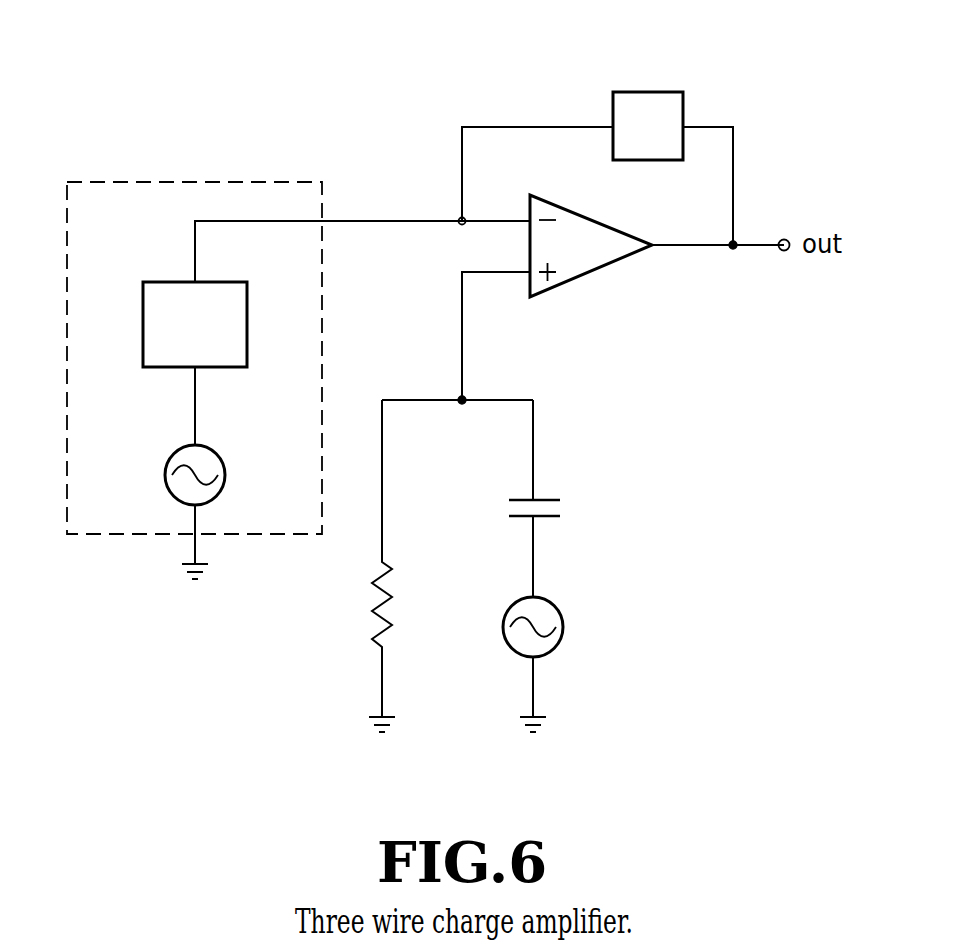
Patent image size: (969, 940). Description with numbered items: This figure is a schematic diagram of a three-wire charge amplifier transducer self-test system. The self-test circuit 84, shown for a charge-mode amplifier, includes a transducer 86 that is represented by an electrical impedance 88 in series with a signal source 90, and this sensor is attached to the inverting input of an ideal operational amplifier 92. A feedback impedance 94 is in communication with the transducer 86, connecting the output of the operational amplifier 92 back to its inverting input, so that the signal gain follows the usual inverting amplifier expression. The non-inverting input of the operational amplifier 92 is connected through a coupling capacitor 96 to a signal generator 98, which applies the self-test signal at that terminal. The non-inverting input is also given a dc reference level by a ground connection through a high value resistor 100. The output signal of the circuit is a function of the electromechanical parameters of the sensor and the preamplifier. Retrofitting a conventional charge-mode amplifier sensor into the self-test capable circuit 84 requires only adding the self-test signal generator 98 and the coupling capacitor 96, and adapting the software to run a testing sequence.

The self-test circuit 84 is at (142, 120).
The transducer 86 is at (322, 318).
The electrical impedance 88 is at (143, 320).
The signal source 90 is at (167, 457).
The operational amplifier 92 is at (597, 270).
The feedback impedance 94 is at (641, 92).
The coupling capacitor 96 is at (546, 525).
The signal generator 98 is at (560, 656).
The high value resistor 100 is at (388, 576).